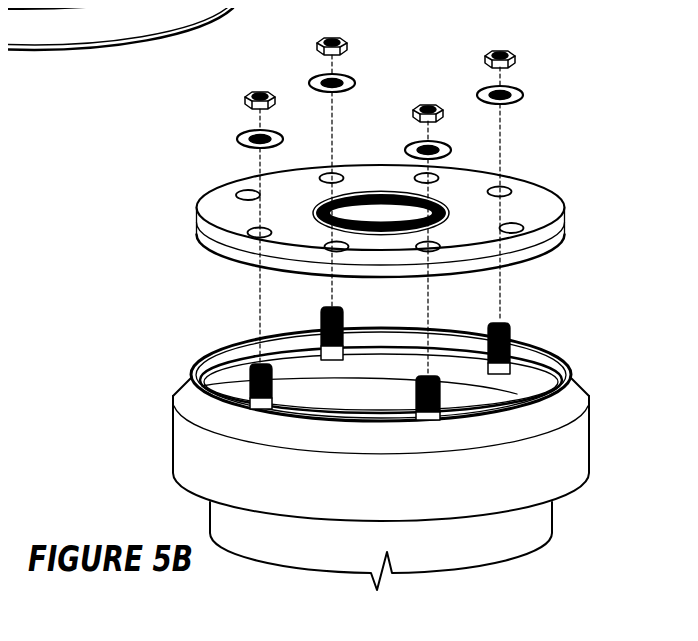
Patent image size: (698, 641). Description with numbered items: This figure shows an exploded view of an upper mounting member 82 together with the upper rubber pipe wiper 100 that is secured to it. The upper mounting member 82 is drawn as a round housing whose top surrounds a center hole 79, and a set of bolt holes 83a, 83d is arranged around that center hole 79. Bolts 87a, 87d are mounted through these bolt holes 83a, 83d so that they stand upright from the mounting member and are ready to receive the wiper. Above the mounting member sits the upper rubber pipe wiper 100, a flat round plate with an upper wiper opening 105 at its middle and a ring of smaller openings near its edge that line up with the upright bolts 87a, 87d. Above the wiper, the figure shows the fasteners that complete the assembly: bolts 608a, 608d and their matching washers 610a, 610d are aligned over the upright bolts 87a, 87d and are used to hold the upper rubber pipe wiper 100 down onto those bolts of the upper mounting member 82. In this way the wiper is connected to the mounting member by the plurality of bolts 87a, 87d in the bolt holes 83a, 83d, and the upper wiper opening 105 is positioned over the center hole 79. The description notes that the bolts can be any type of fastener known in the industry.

The bolt 608d is at (345, 16).
The washer 610d is at (359, 57).
The bolt 608a is at (512, 28).
The washer 610a is at (529, 70).
The upper rubber pipe wiper 100 is at (445, 183).
The upper wiper opening 105 is at (372, 194).
The upper mounting member 82 is at (190, 465).
The center hole 79 is at (375, 366).
The bolt hole 83d is at (313, 353).
The bolt 87d is at (335, 348).
The bolt hole 83a is at (502, 365).
The bolt 87a is at (481, 358).